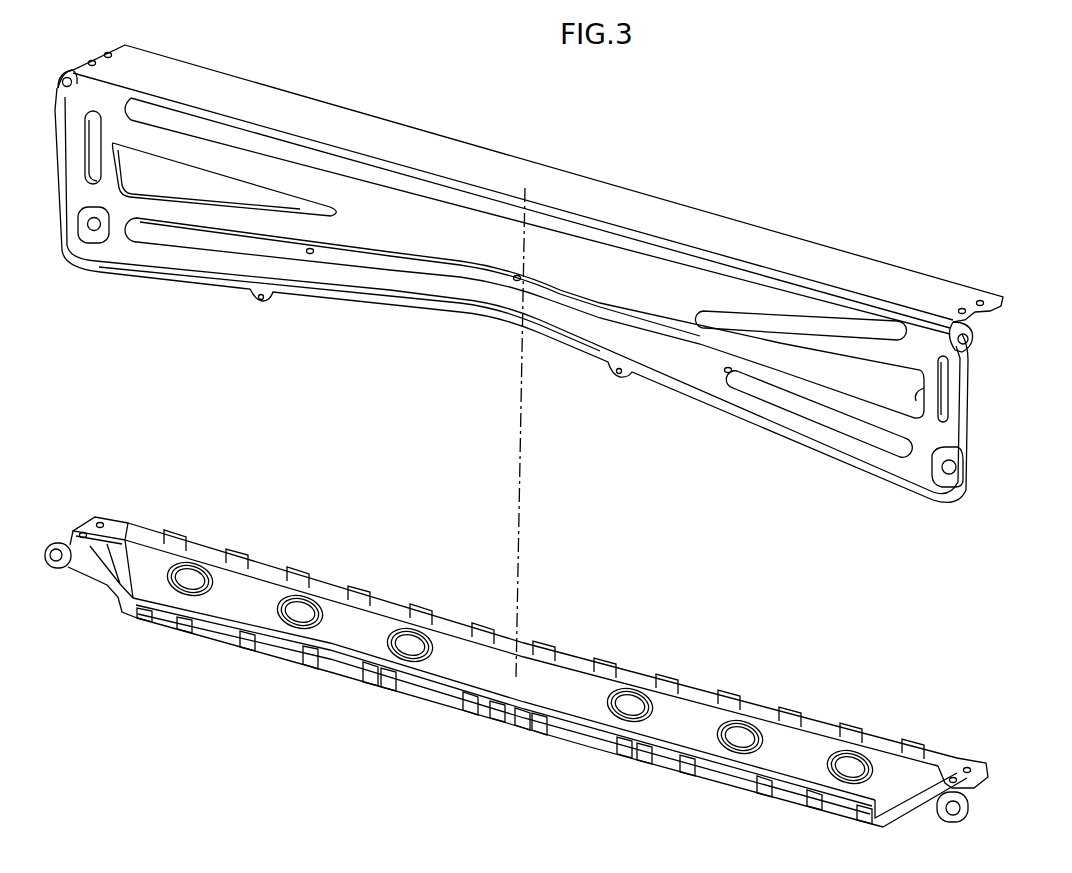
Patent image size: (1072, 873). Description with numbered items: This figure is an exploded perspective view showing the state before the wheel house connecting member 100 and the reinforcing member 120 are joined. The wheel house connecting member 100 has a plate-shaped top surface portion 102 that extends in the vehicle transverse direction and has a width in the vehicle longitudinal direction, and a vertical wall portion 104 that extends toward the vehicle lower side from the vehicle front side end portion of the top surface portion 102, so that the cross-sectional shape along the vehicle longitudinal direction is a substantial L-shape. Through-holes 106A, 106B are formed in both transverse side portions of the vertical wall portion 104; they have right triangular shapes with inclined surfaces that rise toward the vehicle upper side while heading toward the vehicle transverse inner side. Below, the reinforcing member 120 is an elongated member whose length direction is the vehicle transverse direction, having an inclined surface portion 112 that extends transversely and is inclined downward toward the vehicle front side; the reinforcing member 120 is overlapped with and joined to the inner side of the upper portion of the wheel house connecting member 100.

The wheel house connecting member 100 is at (538, 156).
The top surface portion 102 is at (648, 210).
The vertical wall portion 104 is at (673, 315).
The through-hole 106A is at (186, 190).
The through-hole 106B is at (944, 427).
The inclined surface portion 112 is at (488, 673).
The reinforcing member 120 is at (863, 713).